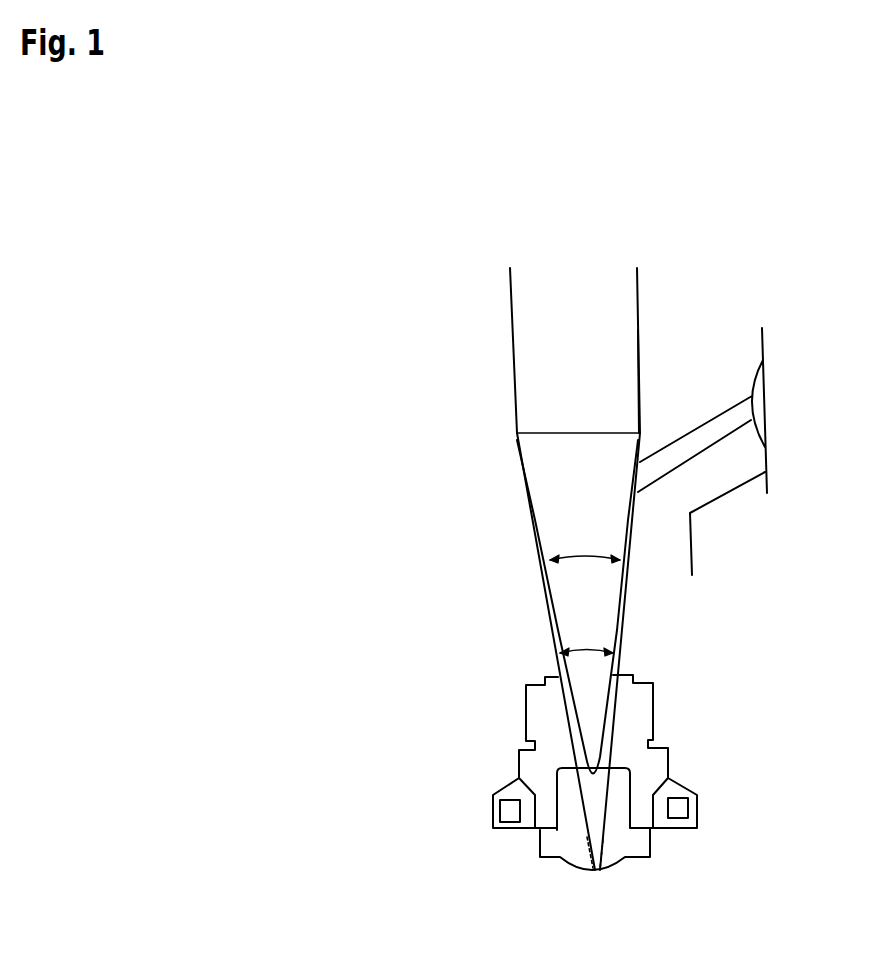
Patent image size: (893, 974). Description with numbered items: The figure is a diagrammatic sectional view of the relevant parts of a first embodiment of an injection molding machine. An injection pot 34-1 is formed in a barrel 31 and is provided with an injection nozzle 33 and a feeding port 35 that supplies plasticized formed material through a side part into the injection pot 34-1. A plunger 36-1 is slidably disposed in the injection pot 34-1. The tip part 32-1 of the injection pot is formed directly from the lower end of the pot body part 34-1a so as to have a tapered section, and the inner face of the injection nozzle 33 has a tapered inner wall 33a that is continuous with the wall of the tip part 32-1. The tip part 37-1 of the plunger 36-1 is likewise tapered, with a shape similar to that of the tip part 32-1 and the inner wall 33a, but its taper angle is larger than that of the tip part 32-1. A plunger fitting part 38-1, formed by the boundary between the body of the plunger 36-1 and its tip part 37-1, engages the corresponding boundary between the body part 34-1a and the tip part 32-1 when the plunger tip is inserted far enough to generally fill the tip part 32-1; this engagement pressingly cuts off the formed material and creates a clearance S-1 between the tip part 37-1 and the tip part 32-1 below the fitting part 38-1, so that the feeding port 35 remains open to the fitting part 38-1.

The barrel 31 is at (720, 482).
The tip part of the injection pot 32-1 is at (566, 703).
The injection nozzle 33 is at (622, 857).
The inner wall of the injection nozzle 33a is at (597, 870).
The injection pot 34-1 is at (637, 297).
The body part of the injection pot 34-1a is at (632, 389).
The feeding port 35 is at (697, 440).
The plunger 36-1 is at (528, 343).
The tip part of the plunger 37-1 is at (543, 514).
The plunger fitting part 38-1 is at (510, 437).
The clearance S-1 is at (615, 690).